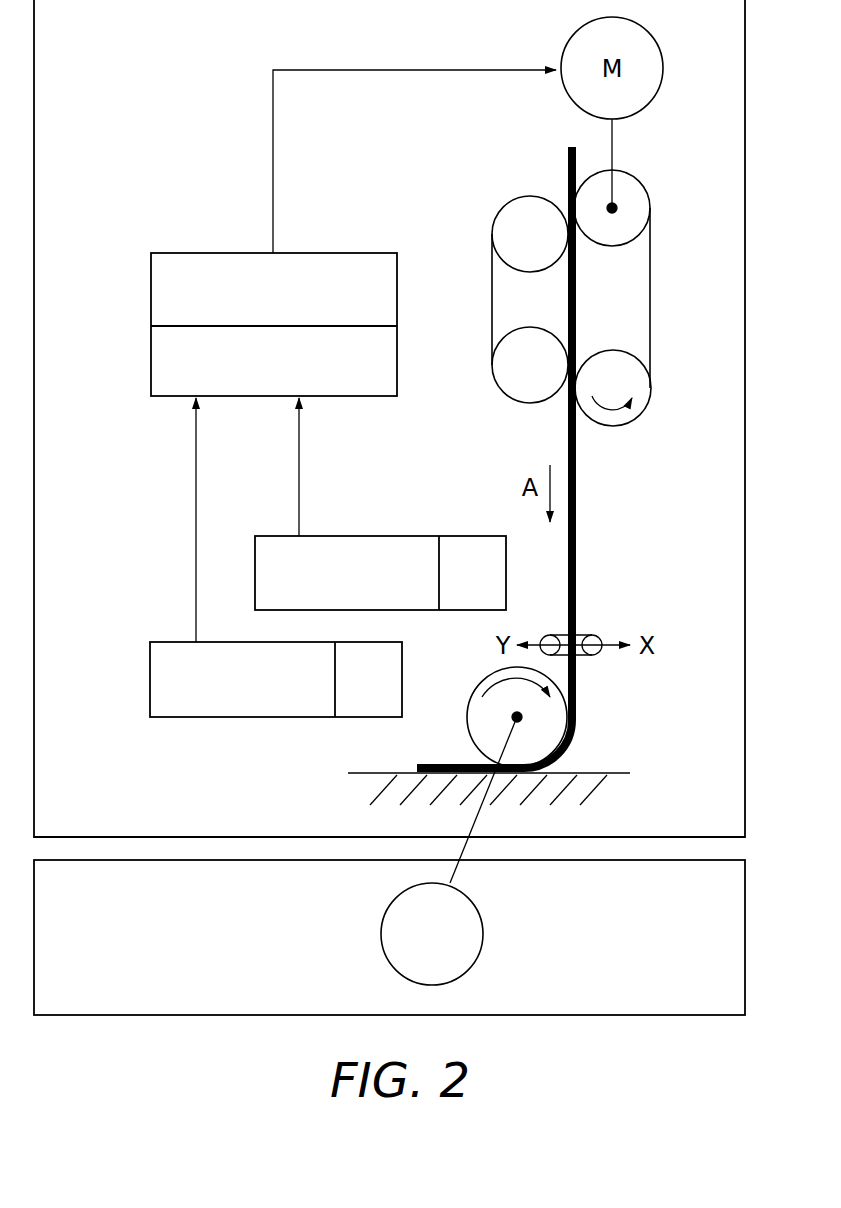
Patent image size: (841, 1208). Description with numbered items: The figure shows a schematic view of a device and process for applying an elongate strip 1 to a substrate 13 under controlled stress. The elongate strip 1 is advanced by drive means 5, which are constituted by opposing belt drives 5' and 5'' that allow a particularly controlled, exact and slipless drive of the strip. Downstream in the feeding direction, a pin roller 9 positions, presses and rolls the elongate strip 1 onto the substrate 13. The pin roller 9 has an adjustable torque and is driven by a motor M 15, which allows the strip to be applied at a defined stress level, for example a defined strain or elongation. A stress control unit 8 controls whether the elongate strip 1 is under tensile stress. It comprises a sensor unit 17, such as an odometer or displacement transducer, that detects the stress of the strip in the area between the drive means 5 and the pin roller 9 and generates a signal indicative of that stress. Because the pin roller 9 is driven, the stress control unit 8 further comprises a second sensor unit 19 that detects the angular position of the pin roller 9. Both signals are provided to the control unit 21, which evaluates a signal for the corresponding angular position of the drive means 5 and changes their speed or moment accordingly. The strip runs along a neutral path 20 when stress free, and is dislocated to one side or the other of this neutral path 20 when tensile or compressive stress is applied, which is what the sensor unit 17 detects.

The elongate strip 1 is at (578, 476).
The drive means 5 is at (577, 283).
The belt drive 5' is at (639, 298).
The belt drive 5'' is at (505, 299).
The stress control unit 8 is at (126, 499).
The pin roller 9 is at (551, 732).
The substrate 13 is at (382, 773).
The motor M 15 is at (477, 938).
The sensor unit 17 is at (380, 504).
The second sensor unit 19 is at (150, 682).
The neutral path 20 is at (578, 600).
The control unit 21 is at (151, 287).